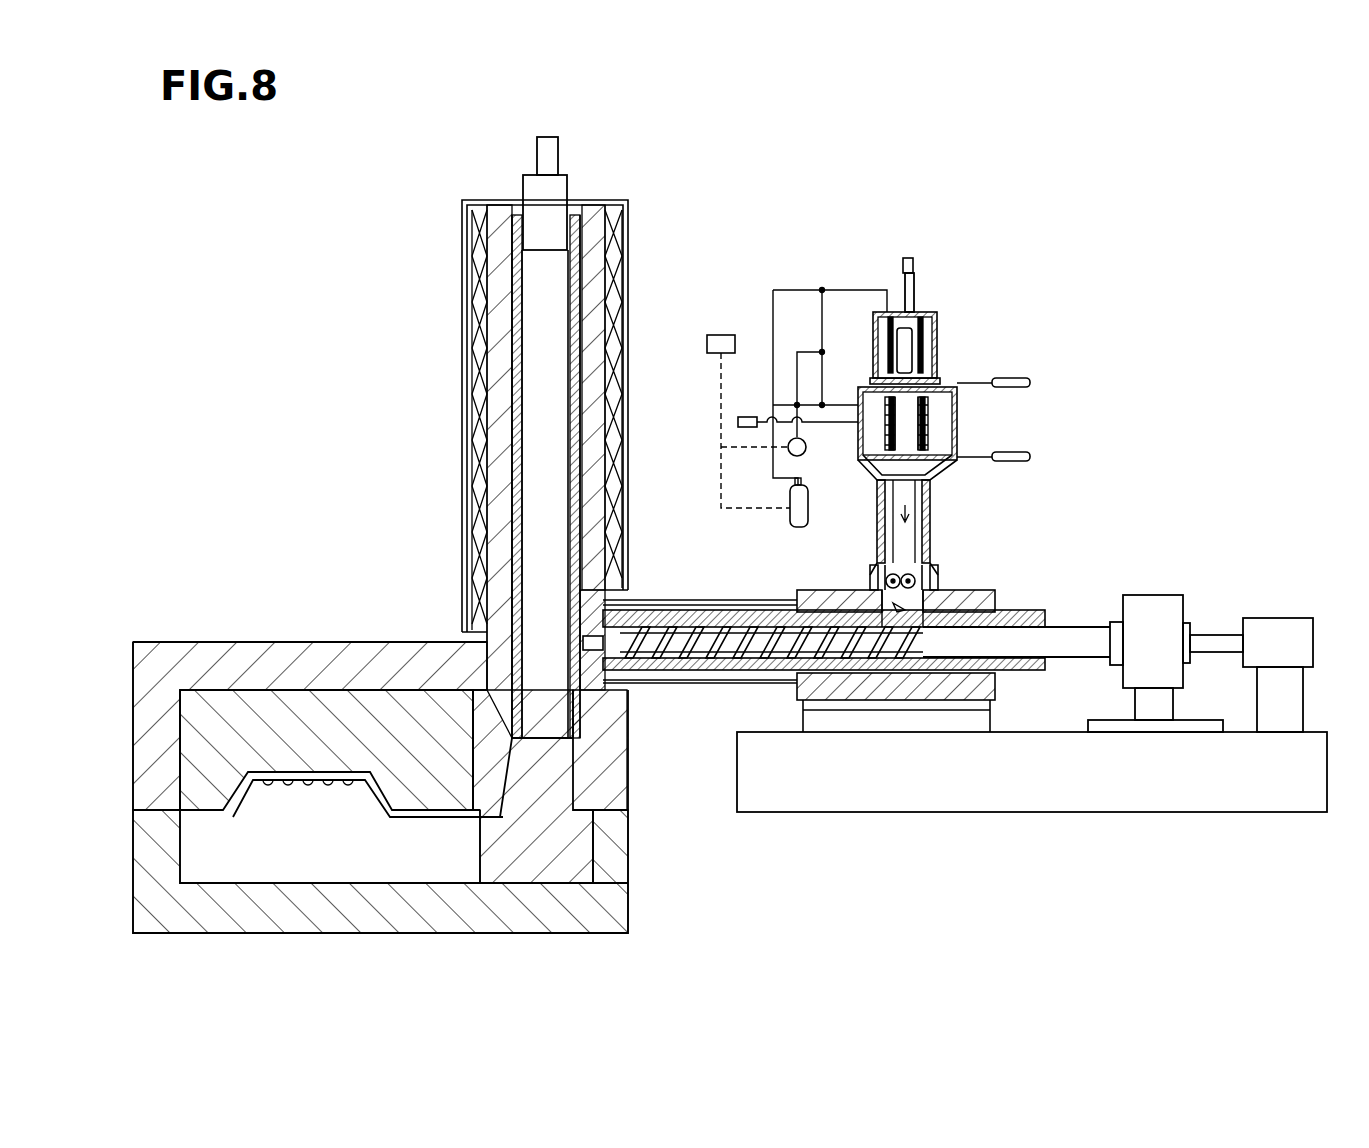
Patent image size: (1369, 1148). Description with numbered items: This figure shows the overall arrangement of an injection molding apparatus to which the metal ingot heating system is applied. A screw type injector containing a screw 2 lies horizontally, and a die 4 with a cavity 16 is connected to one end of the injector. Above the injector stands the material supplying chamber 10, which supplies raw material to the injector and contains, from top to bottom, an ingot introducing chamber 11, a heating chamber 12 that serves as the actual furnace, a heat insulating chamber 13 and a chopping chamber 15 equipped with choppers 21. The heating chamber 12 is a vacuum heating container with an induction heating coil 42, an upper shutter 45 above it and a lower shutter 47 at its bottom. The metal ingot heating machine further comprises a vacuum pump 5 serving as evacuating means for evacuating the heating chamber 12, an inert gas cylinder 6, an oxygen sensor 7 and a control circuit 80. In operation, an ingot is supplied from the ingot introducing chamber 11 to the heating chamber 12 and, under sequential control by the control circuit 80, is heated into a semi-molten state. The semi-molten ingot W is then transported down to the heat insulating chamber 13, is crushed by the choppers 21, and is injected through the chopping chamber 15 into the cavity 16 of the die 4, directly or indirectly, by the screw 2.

The screw 2 is at (737, 677).
The die 4 is at (263, 717).
The cavity 16 is at (373, 772).
The vacuum pump 5 is at (806, 452).
The inert gas cylinder 6 is at (800, 527).
The oxygen sensor 7 is at (750, 417).
The control circuit 80 is at (723, 335).
The material supplying chamber 10 is at (977, 415).
The ingot introducing chamber 11 is at (913, 343).
The semi-molten ingot W is at (937, 322).
The heating chamber 12 is at (940, 435).
The heat insulating chamber 13 is at (960, 521).
The chopping chamber 15 is at (875, 585).
The choppers 21 is at (937, 567).
The induction heating coil 42 is at (930, 413).
The upper shutter 45 is at (933, 403).
The lower shutter 47 is at (937, 475).